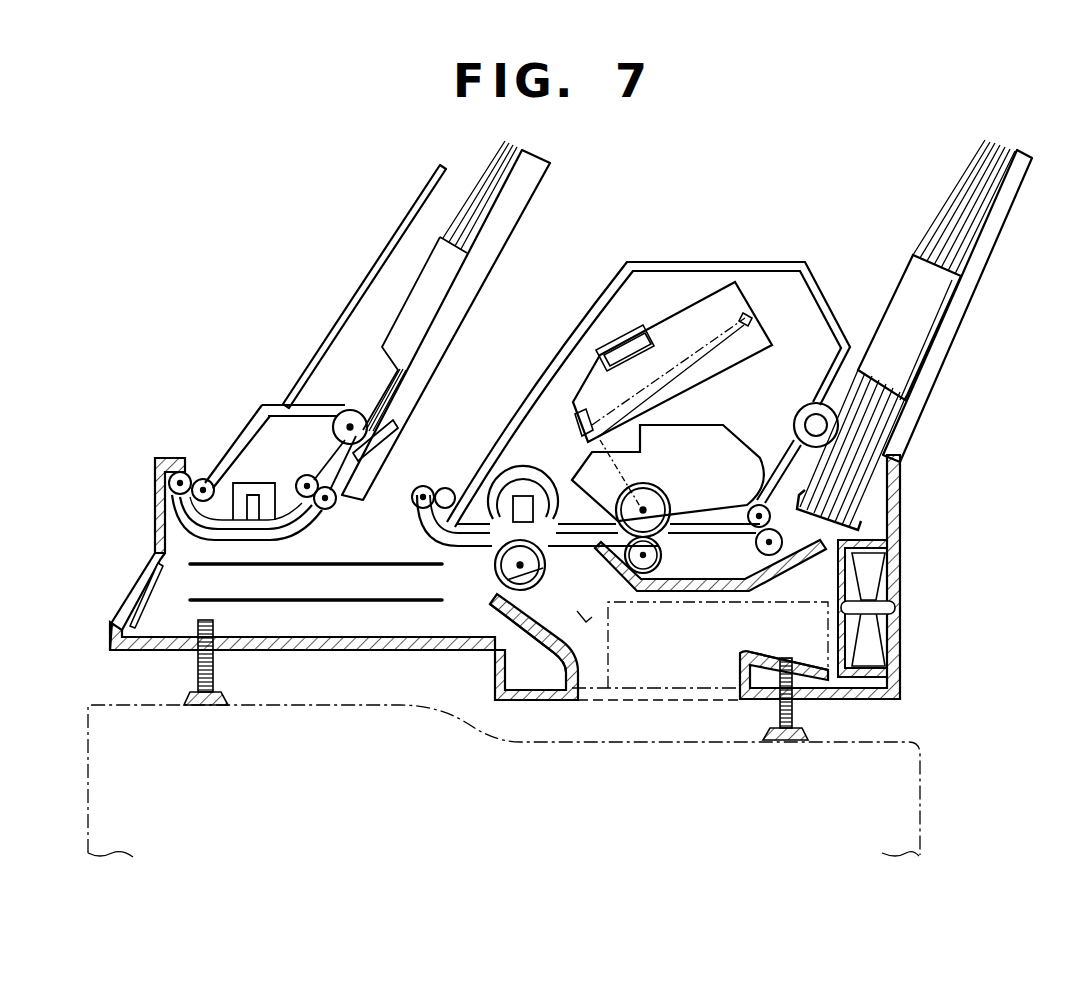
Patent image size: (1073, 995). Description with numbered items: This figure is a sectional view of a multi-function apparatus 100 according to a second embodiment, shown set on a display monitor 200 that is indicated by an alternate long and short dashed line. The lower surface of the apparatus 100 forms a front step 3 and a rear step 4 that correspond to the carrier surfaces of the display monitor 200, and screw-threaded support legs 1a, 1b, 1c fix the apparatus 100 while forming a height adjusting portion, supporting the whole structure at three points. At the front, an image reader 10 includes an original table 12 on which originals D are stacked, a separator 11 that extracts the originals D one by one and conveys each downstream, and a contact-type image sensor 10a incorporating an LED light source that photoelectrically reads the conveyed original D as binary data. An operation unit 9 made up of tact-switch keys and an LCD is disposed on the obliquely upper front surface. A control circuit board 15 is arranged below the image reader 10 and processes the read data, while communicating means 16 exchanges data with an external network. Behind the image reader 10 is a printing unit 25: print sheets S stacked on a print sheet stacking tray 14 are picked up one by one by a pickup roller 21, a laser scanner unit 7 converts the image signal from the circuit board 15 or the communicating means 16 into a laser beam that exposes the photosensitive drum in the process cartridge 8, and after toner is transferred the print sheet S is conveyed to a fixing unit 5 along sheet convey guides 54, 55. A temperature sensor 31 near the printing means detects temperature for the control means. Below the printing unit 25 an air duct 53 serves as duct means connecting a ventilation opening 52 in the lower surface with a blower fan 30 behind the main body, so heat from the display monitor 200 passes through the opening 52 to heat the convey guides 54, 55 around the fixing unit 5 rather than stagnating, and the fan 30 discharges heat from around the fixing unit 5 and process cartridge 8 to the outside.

The multi-function apparatus 100 is at (338, 246).
The image reader 10 is at (250, 430).
The contact-type image sensor 10a is at (240, 492).
The separator 11 is at (348, 410).
The original table 12 is at (533, 165).
The operation unit 9 is at (112, 604).
The front step 3 is at (360, 652).
The temperature sensor 31 is at (497, 600).
The air duct 53 is at (543, 632).
The ventilation opening 52 is at (573, 697).
The control circuit board 15 is at (308, 587).
The support leg 1a is at (200, 685).
The rear step 4 is at (745, 705).
The support leg 1b is at (771, 748).
The support leg 1c is at (773, 742).
The blower fan 30 is at (868, 657).
The communicating means 16 is at (826, 610).
The display monitor 200 is at (922, 797).
The original D is at (513, 140).
The sheet convey guide 55 is at (422, 530).
The fixing unit 5 is at (517, 478).
The process cartridge 8 is at (745, 430).
The printing unit 25 is at (653, 290).
The laser scanner unit 7 is at (705, 303).
The sheet convey guide 54 is at (687, 548).
The pickup roller 21 is at (833, 420).
The print sheet stacking tray 14 is at (963, 300).
The print sheet S is at (980, 173).